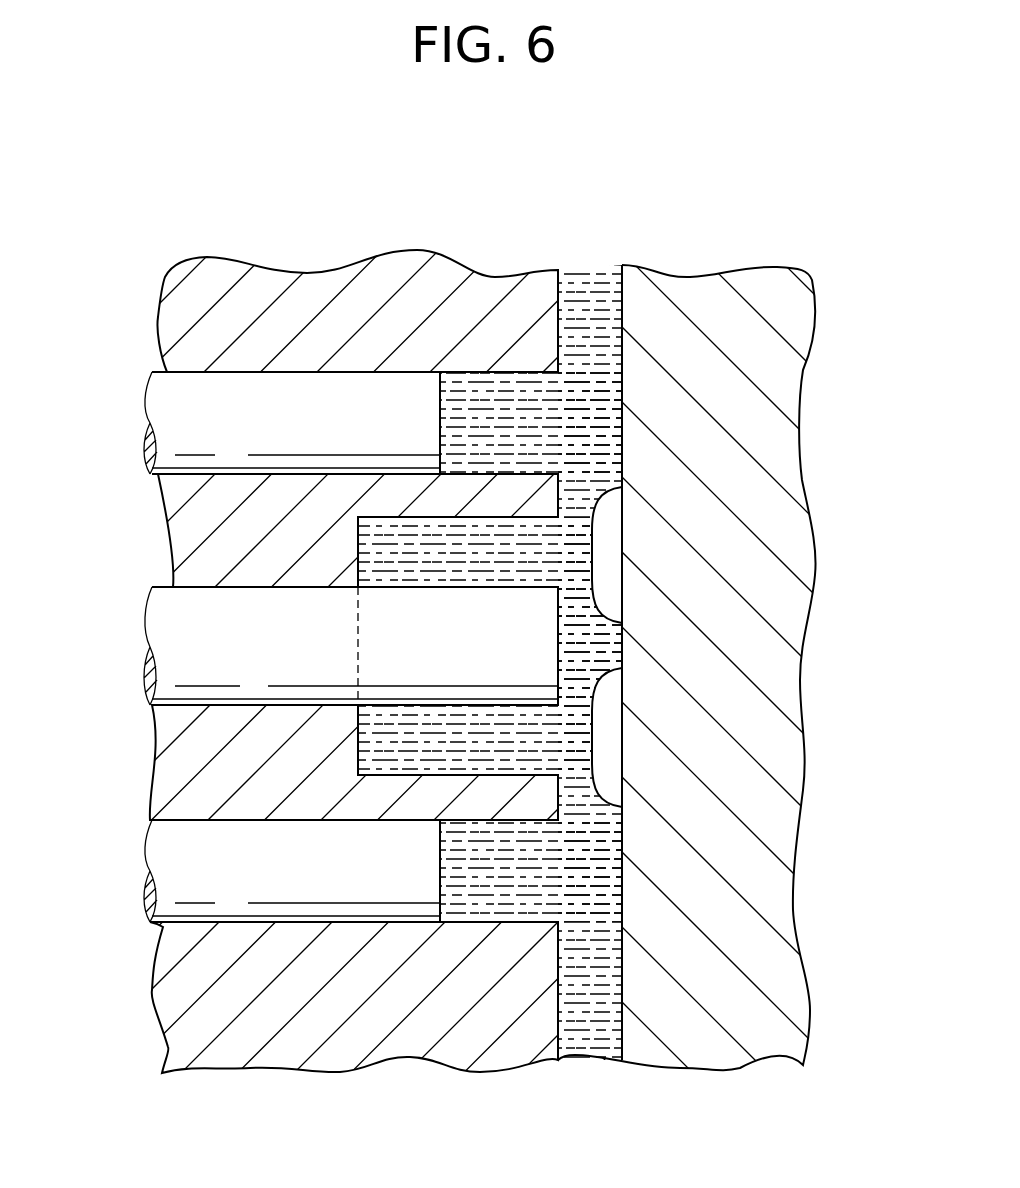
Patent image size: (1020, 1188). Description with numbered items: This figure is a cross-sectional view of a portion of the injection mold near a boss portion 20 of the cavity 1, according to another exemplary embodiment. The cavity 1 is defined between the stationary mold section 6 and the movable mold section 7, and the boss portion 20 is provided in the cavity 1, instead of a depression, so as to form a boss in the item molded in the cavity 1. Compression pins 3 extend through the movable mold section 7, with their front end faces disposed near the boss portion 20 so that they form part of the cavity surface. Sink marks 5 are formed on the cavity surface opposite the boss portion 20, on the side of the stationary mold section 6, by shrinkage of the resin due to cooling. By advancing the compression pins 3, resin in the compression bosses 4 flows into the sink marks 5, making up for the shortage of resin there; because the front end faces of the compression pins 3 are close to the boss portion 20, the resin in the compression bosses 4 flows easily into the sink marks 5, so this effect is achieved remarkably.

The cavity 1 is at (603, 442).
The compression pin 3 is at (192, 427).
The compression boss 4 is at (468, 385).
The sink mark 5 is at (613, 742).
The stationary mold section 6 is at (693, 300).
The movable mold section 7 is at (486, 275).
The boss portion 20 is at (367, 545).